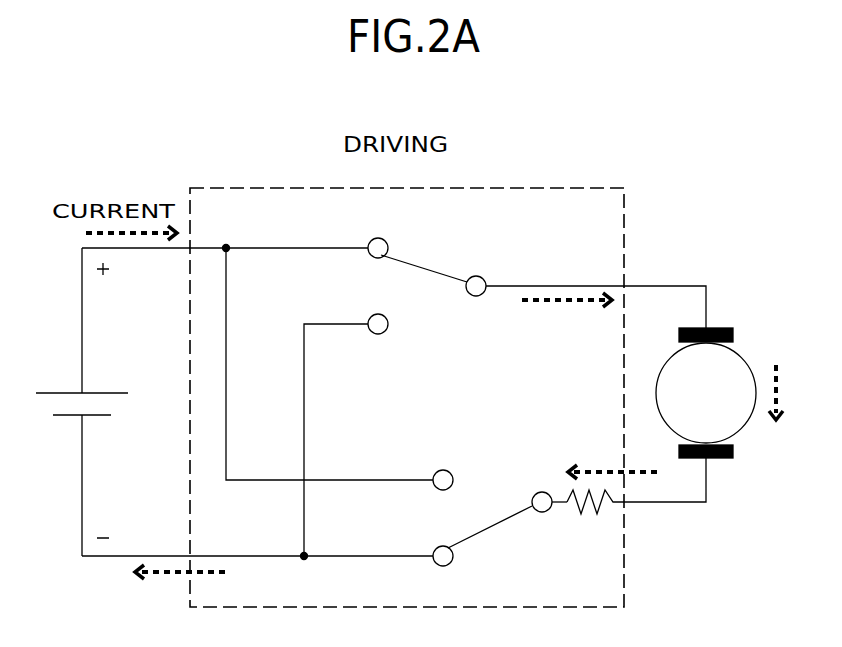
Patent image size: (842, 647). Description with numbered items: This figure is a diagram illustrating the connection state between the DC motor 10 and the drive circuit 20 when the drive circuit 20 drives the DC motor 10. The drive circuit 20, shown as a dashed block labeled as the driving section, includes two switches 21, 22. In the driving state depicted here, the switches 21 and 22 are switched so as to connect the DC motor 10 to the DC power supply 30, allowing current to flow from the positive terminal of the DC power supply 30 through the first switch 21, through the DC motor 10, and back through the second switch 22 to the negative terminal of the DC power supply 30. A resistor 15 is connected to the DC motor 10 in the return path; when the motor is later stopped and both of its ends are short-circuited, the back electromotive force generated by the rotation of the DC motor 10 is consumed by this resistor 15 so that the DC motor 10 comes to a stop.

The DC motor 10 is at (748, 350).
The resistor 15 is at (610, 505).
The drive circuit 20 is at (553, 185).
The switch 21 is at (432, 272).
The switch 22 is at (490, 525).
The DC power supply 30 is at (72, 392).